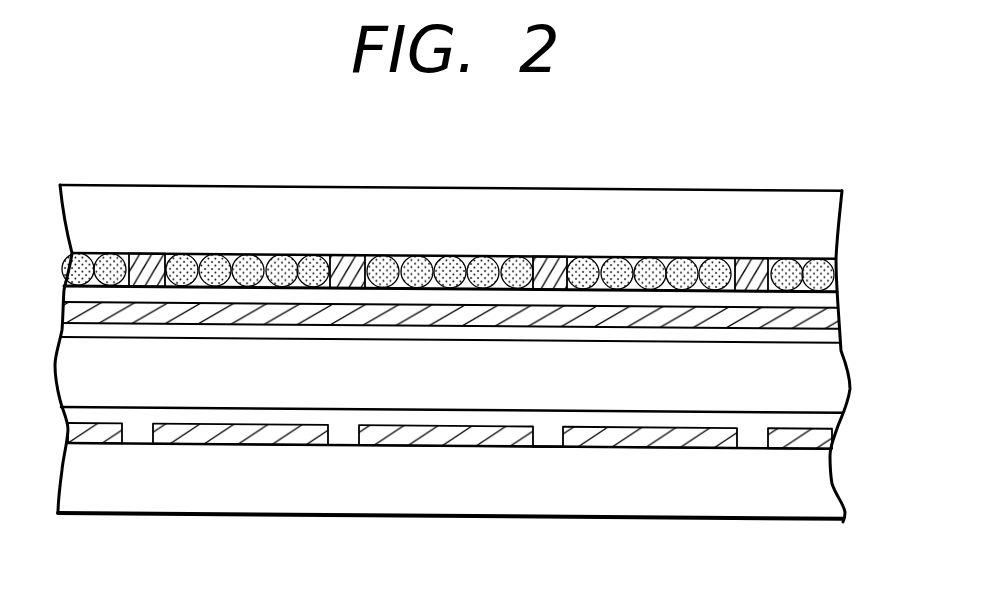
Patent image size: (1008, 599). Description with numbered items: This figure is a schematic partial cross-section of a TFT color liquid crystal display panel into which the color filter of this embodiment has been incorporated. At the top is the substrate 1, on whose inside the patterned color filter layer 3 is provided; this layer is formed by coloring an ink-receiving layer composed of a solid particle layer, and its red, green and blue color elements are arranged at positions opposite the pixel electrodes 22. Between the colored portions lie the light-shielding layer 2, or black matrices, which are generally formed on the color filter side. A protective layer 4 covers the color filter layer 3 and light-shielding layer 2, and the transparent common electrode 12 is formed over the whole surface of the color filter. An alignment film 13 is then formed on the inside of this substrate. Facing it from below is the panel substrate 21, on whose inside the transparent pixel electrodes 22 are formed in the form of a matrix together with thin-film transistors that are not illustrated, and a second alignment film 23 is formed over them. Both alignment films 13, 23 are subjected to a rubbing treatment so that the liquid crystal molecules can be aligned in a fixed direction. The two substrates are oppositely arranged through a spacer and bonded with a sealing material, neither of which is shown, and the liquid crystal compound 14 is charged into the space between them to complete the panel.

The substrate 1 is at (738, 197).
The light-shielding layer 2 is at (560, 258).
The patterned color filter layer 3 is at (487, 259).
The protective layer 4 is at (830, 301).
The common electrode 12 is at (833, 320).
The alignment film 13 is at (830, 340).
The liquid crystal compound 14 is at (833, 397).
The panel substrate 21 is at (820, 487).
The pixel electrode 22 is at (662, 436).
The alignment film 23 is at (548, 435).